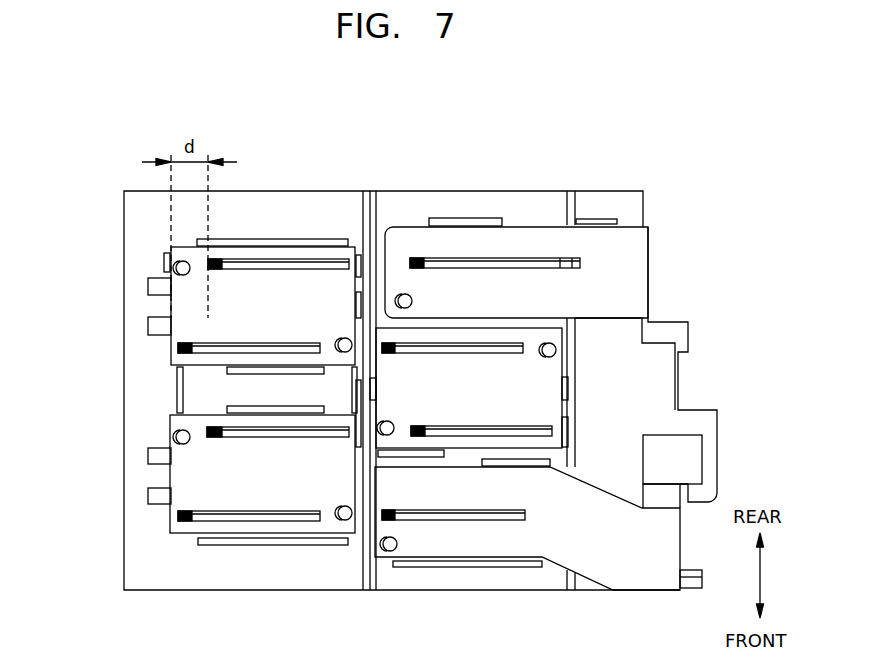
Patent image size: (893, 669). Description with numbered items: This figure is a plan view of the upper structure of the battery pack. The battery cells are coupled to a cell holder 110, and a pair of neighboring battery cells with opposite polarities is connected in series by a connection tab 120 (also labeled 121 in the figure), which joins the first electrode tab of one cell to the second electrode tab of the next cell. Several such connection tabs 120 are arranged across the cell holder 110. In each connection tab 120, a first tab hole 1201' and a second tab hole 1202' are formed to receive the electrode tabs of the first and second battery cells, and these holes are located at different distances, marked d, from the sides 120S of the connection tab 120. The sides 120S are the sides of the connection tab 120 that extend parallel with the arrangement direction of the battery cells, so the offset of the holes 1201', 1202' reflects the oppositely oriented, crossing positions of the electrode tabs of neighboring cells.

The cell holder 110 is at (465, 198).
The connection tab 120 is at (263, 251).
The battery module 121 is at (278, 252).
The sides of the connection tabs 120S is at (171, 304).
The first tab hole 1201' is at (103, 265).
The second tab hole 1202' is at (178, 350).